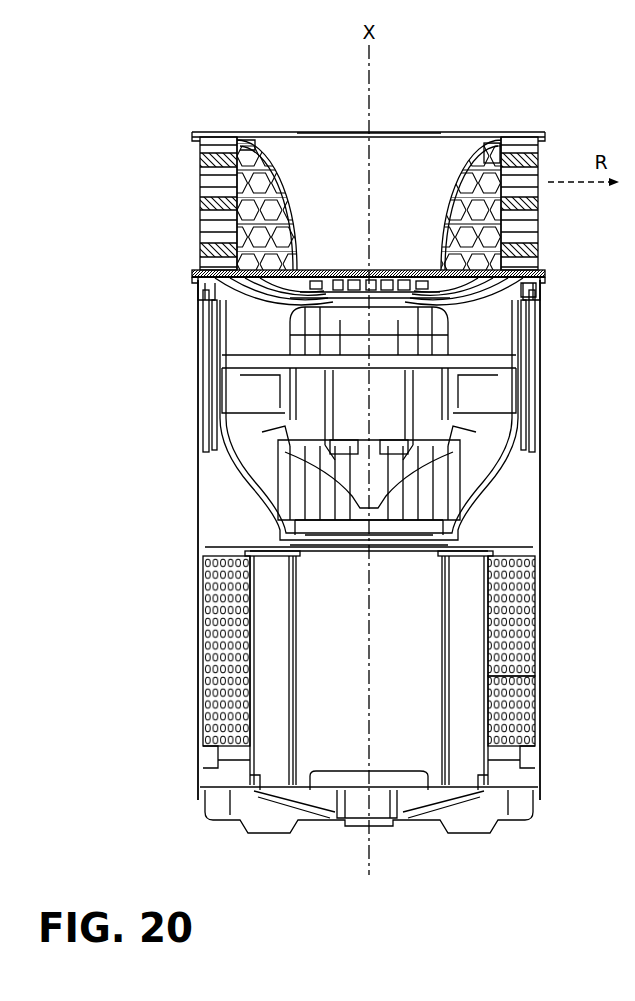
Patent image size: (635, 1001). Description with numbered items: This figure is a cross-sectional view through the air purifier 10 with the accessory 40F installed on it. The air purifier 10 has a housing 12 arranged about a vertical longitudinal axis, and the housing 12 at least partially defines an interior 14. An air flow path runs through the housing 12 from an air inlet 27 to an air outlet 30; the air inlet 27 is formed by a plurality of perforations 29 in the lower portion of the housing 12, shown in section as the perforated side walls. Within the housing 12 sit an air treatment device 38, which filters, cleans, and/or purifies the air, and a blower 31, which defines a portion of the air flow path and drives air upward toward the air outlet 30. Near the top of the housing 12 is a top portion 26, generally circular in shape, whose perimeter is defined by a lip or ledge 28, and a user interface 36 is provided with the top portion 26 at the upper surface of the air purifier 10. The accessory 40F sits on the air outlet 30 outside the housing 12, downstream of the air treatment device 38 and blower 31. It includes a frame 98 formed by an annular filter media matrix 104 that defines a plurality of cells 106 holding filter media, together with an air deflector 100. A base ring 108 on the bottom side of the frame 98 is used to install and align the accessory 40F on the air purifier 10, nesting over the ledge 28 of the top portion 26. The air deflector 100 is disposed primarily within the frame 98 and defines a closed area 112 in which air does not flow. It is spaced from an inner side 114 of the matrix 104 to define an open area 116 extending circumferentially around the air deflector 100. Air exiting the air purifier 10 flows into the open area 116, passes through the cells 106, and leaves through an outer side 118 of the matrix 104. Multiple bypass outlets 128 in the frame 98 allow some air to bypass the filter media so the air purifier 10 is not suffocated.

The air purifier 10 is at (192, 403).
The housing 12 is at (537, 504).
The interior 14 is at (217, 513).
The top portion 26 is at (535, 292).
The air inlet 27 is at (537, 620).
The lip or ledge 28 is at (200, 283).
The perforations 29 is at (532, 728).
The air outlet 30 is at (480, 283).
The blower 31 is at (463, 460).
The user interface 36 is at (353, 277).
The air treatment device 38 is at (272, 639).
The accessory 40F is at (188, 180).
The frame 98 is at (538, 150).
The air deflector 100 is at (452, 188).
The filter media matrix 104 is at (203, 253).
The cells 106 is at (202, 217).
The base ring 108 is at (535, 287).
The closed area 112 is at (383, 224).
The inner side 114 is at (255, 142).
The open area 116 is at (200, 172).
The outer side 118 is at (200, 163).
The bypass outlets 128 is at (495, 152).